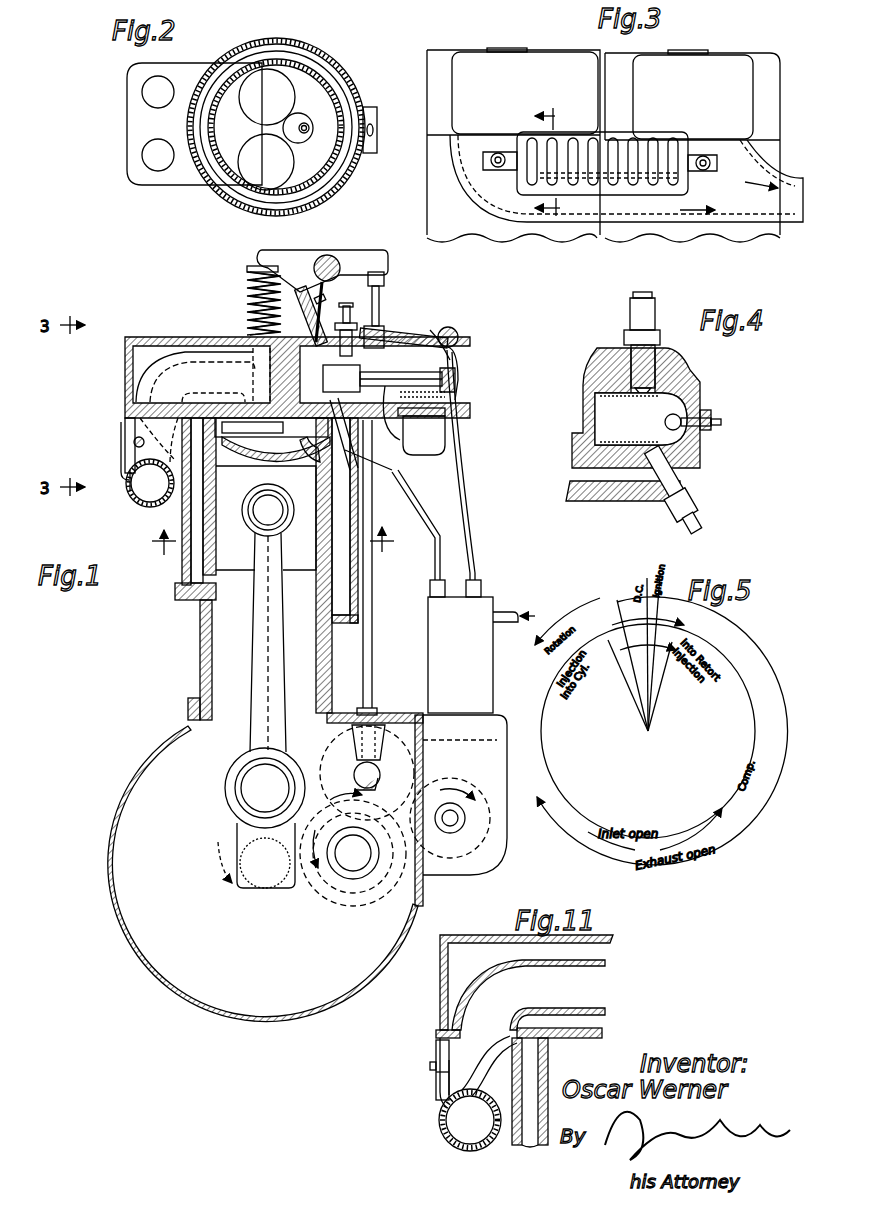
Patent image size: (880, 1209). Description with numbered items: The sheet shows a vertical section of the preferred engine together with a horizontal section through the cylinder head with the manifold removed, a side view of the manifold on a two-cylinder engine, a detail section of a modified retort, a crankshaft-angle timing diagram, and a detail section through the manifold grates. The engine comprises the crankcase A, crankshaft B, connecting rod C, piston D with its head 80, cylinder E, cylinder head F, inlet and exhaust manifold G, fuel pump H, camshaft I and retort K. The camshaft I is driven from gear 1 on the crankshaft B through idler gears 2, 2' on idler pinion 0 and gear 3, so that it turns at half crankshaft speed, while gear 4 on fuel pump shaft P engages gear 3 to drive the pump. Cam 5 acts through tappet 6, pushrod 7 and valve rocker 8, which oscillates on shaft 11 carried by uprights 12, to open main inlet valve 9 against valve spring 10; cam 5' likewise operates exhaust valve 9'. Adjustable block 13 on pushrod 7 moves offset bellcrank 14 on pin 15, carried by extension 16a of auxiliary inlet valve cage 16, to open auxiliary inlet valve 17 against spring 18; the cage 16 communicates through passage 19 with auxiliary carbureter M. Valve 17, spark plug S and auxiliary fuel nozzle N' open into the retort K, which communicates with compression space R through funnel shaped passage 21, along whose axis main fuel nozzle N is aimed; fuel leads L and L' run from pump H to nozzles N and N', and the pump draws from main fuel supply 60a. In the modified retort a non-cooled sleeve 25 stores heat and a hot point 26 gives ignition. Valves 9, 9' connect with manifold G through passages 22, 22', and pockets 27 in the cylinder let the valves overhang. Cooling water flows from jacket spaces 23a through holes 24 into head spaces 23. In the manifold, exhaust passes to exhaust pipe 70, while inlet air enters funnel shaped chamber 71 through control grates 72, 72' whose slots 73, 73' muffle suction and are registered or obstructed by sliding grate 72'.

In FIG. 1, the gear 1 is at (255, 890).
In FIG. 1, the idler gear 2 is at (273, 723).
In FIG. 1, the idler gear 2' is at (353, 849).
In FIG. 1, the gear 3 is at (425, 752).
In FIG. 1, the gear 4 is at (490, 856).
In FIG. 1, the cam 5 is at (353, 782).
In FIG. 1, the cam 5' is at (373, 751).
In FIG. 1, the tappet 6 is at (378, 712).
In FIG. 1, the pushrod 7 is at (373, 640).
In FIG. 1, the valve rocker 8 is at (358, 256).
In FIG. 2, the main inlet valve 9 is at (266, 162).
In FIG. 2, the exhaust valve 9' is at (267, 97).
In FIG. 1, the exhaust valve 9' is at (273, 372).
In FIG. 1, the valve spring 10 is at (247, 322).
In FIG. 3, the shaft 11 is at (656, 152).
In FIG. 1, the shaft 11 is at (333, 258).
In FIG. 1, the uprights 12 is at (325, 302).
In FIG. 1, the adjustable block 13 is at (380, 334).
In FIG. 1, the offset bellcrank 14 is at (440, 333).
In FIG. 1, the pin 15 is at (458, 337).
In FIG. 1, the auxiliary inlet valve cage 16 is at (428, 343).
In FIG. 1, the extension 16a is at (428, 330).
In FIG. 1, the auxiliary inlet valve 17 is at (422, 399).
In FIG. 1, the valve spring 18 is at (452, 370).
In FIG. 1, the passage 19 is at (447, 412).
In FIG. 2, the funnel shaped passage 21 is at (303, 118).
In FIG. 1, the funnel shaped passage 21 is at (282, 440).
In FIG. 2, the passage 22 is at (158, 123).
In FIG. 11, the passage 22 is at (528, 999).
In FIG. 1, the passage 22' is at (211, 377).
In FIG. 1, the cooling water spaces 23 is at (195, 376).
In FIG. 11, the cooling water spaces 23 is at (472, 952).
In FIG. 1, the jacket spaces 23a is at (378, 523).
In FIG. 1, the holes 24 is at (193, 396).
In FIG. 4, the non-cooled sleeve 25 is at (700, 393).
In FIG. 4, the hot point 26 is at (665, 420).
In FIG. 2, the pockets 27 is at (248, 62).
In FIG. 1, the pockets 27 is at (271, 427).
In FIG. 1, the main fuel supply 60a is at (514, 604).
In FIG. 3, the exhaust pipe 70 is at (626, 178).
In FIG. 1, the exhaust pipe 70 is at (150, 483).
In FIG. 3, the funnel shaped chamber 71 is at (622, 140).
In FIG. 1, the funnel shaped chamber 71 is at (156, 441).
In FIG. 1, the control grate 72 is at (113, 434).
In FIG. 11, the control grate 72 is at (470, 1093).
In FIG. 3, the control grate 72' is at (602, 171).
In FIG. 1, the control grate 72' is at (104, 451).
In FIG. 11, the control grate 72' is at (418, 1094).
In FIG. 3, the slots 73 is at (602, 145).
In FIG. 11, the slots 73 is at (420, 1078).
In FIG. 11, the slots 73' is at (418, 1070).
In FIG. 1, the piston head 80 is at (233, 470).
In FIG. 1, the crankcase A is at (263, 874).
In FIG. 1, the crankshaft B is at (240, 829).
In FIG. 1, the connecting rod C is at (258, 689).
In FIG. 1, the piston D is at (310, 583).
In FIG. 1, the cylinder E is at (200, 662).
In FIG. 3, the cylinder head F is at (616, 95).
In FIG. 1, the cylinder head F is at (125, 381).
In FIG. 11, the cylinder head F is at (440, 974).
In FIG. 1, the inlet and exhaust manifold G is at (128, 486).
In FIG. 1, the fuel pump H is at (460, 646).
In FIG. 1, the camshaft I is at (353, 780).
In FIG. 1, the retort K is at (341, 378).
In FIG. 4, the retort K is at (641, 419).
In FIG. 1, the fuel lead L is at (470, 465).
In FIG. 1, the fuel lead L' is at (416, 525).
In FIG. 1, the auxiliary carbureter M is at (447, 436).
In FIG. 1, the main fuel nozzle N is at (306, 316).
In FIG. 1, the auxiliary fuel nozzle N' is at (361, 452).
In FIG. 4, the auxiliary fuel nozzle N' is at (690, 490).
In FIG. 1, the fuel pump shaft P is at (450, 818).
In FIG. 1, the compression space R is at (276, 441).
In FIG. 1, the spark plug S is at (356, 330).
In FIG. 4, the spark plug S is at (648, 320).
In FIG. 1, the idler pinion 0 is at (353, 853).